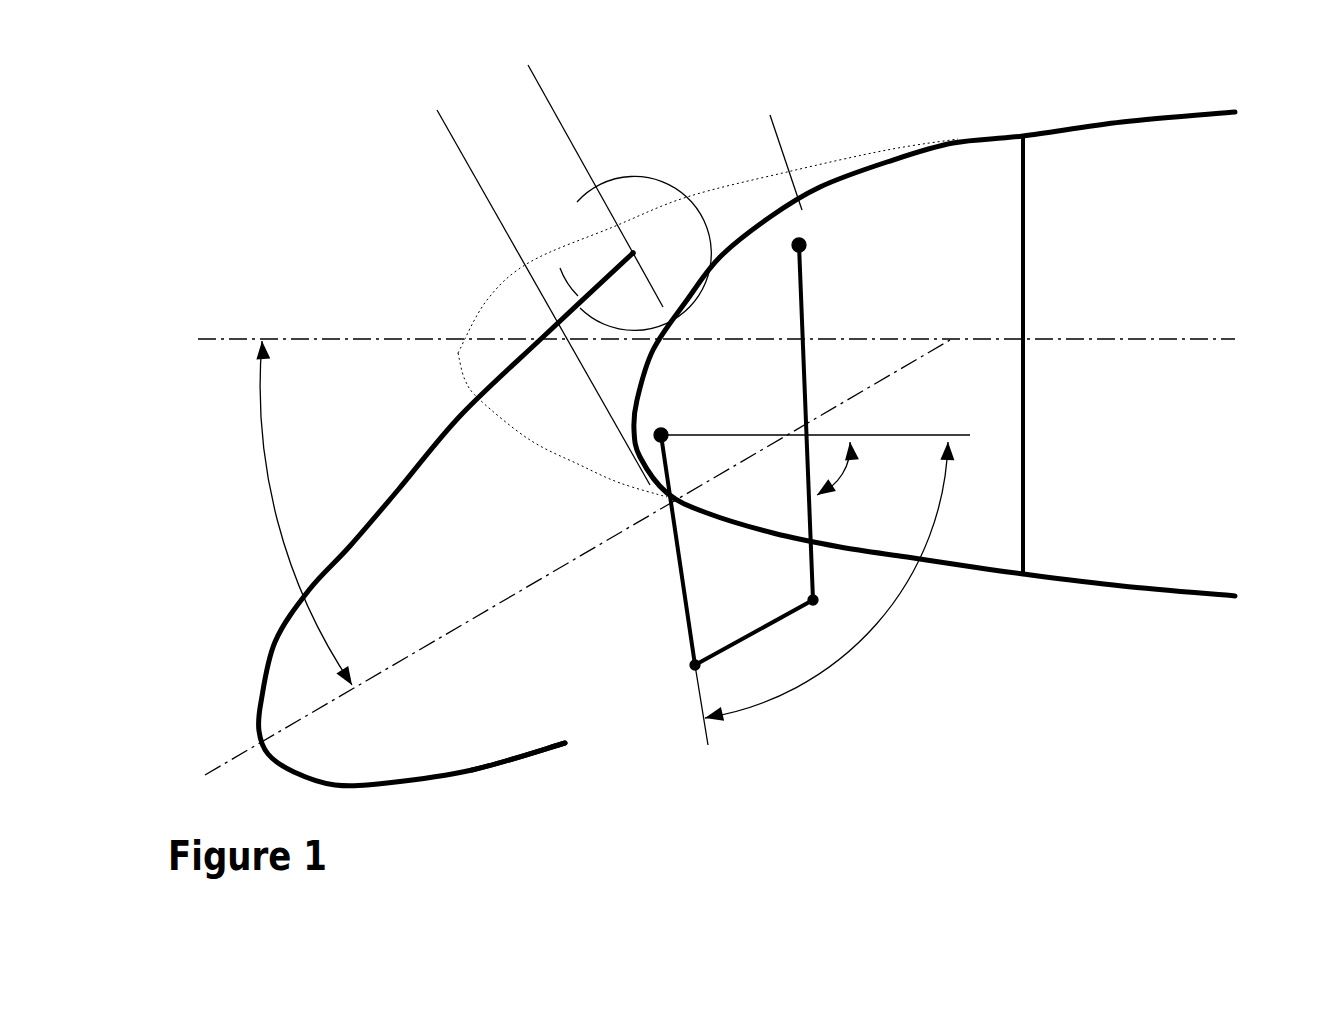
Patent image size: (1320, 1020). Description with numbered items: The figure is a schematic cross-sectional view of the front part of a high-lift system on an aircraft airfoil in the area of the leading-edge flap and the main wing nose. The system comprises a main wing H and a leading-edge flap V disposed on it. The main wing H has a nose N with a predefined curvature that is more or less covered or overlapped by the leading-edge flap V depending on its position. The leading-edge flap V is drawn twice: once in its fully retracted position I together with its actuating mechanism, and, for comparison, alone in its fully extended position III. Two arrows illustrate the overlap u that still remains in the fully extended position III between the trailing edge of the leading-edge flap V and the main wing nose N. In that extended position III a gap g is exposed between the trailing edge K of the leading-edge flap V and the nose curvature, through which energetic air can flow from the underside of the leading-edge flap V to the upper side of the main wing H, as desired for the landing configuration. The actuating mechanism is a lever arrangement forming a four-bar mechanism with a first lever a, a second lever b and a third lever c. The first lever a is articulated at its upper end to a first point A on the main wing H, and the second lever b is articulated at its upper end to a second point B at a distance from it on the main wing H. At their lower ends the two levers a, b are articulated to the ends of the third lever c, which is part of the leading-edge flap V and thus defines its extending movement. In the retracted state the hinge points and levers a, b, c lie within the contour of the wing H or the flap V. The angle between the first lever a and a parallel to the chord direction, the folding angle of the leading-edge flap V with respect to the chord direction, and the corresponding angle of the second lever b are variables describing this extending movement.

The main wing H is at (1241, 276).
The fully extended position III is at (445, 519).
The leading-edge flap V is at (505, 767).
The retracted position I is at (708, 318).
The overlap u is at (622, 48).
The gap g is at (633, 253).
The trailing edge K is at (618, 252).
The nose N is at (771, 131).
The second point B is at (806, 243).
The first point A is at (668, 433).
The second lever b is at (813, 555).
The first lever a is at (682, 587).
The third lever c is at (768, 628).